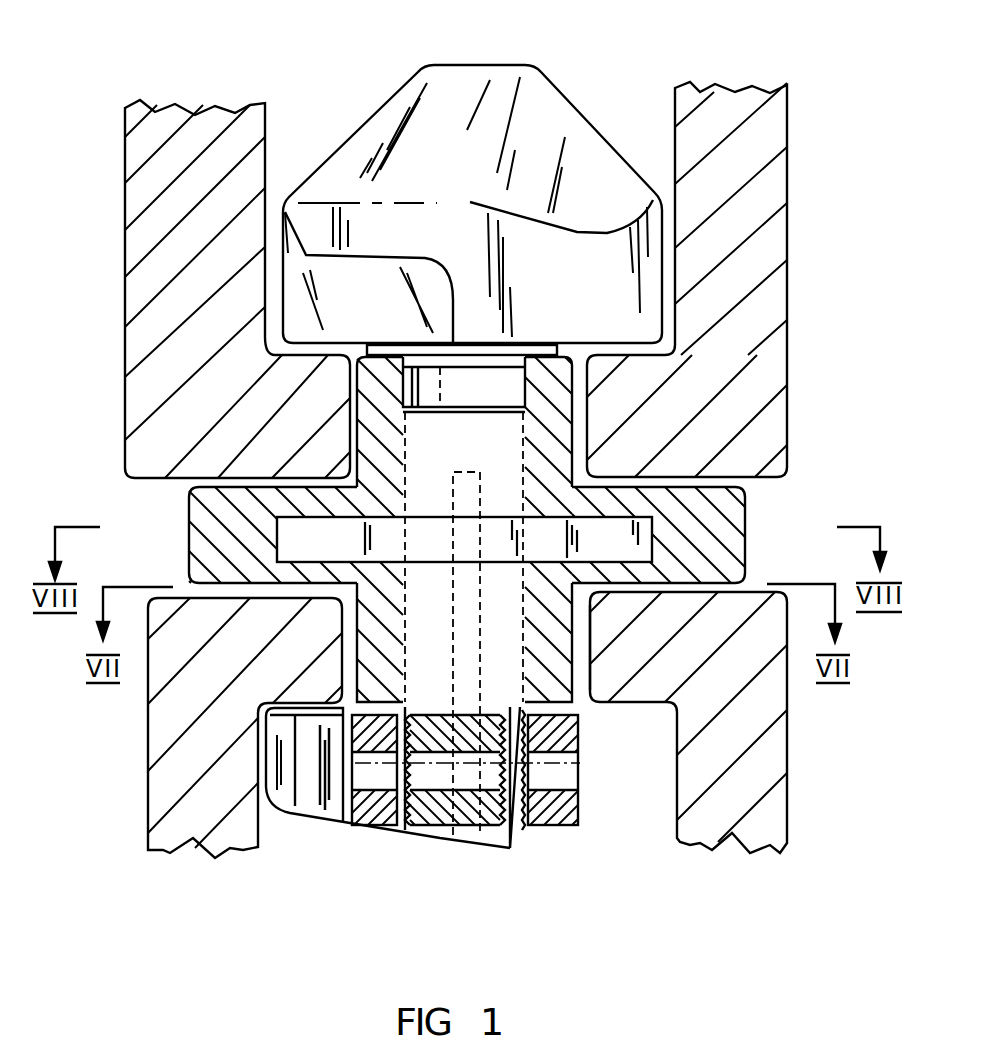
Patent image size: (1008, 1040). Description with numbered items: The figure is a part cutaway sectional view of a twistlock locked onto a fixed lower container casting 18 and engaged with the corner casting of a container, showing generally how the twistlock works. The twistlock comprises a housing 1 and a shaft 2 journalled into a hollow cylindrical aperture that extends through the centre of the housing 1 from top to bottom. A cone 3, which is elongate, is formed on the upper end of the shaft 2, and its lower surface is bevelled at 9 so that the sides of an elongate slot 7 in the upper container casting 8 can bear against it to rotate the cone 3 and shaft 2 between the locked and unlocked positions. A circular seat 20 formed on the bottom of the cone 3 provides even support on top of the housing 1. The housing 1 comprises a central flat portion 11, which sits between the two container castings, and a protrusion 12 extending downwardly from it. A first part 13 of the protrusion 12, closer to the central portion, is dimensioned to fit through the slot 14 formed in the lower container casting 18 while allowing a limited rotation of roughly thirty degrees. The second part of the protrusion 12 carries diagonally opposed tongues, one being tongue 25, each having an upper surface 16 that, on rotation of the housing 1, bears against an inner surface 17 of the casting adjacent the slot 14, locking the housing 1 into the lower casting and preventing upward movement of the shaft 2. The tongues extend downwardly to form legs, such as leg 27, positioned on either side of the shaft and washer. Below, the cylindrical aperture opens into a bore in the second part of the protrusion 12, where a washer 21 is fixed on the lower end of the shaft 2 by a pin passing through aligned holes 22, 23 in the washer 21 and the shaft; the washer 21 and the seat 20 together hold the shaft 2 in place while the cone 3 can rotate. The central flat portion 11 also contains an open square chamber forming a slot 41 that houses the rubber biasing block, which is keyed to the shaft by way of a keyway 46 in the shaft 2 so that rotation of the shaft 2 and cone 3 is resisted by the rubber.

The housing 1 is at (188, 498).
The shaft 2 is at (457, 444).
The cone 3 is at (550, 127).
The elongate slot 7 is at (355, 405).
The container casting 8 is at (143, 292).
The bevel 9 is at (339, 317).
The central flat portion 11 is at (745, 512).
The protrusion 12 is at (287, 829).
The first part 13 is at (585, 648).
The slot 14 is at (589, 705).
The upper surface 16 is at (336, 812).
The inner surface 17 is at (307, 745).
The lower container casting 18 is at (727, 808).
The circular seat 20 is at (548, 343).
The washer 21 is at (540, 817).
The hole 22 is at (382, 776).
The hole 23 is at (413, 784).
The tongue 25 is at (287, 720).
The leg 27 is at (310, 797).
The slot 41 is at (350, 537).
The keyway in the shaft 46 is at (467, 496).